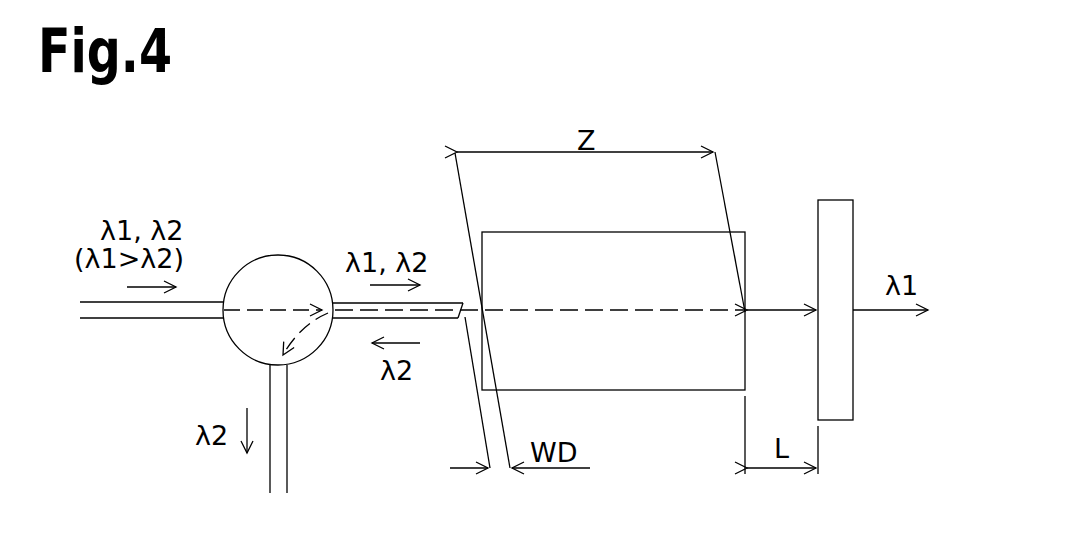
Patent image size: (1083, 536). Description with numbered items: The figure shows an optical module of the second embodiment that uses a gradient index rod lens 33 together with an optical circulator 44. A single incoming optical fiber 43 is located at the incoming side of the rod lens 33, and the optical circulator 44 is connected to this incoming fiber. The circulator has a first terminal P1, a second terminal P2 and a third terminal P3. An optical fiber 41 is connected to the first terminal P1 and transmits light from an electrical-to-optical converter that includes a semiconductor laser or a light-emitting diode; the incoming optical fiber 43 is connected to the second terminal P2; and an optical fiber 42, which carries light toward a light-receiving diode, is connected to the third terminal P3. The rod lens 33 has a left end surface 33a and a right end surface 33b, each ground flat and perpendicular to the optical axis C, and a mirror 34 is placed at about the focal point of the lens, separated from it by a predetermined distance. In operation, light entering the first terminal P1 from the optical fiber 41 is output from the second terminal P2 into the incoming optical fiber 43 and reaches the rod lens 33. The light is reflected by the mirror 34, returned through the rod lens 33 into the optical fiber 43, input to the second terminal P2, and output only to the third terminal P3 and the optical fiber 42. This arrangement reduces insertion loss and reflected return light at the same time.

The optical fiber 41 is at (123, 320).
The optical fiber 42 is at (290, 453).
The incoming optical fiber 43 is at (436, 321).
The optical circulator 44 is at (292, 258).
The gradient index rod lens 33 is at (585, 232).
The left end surface 33a is at (478, 246).
The right end surface 33b is at (746, 245).
The mirror 34 is at (836, 200).
The optical axis C is at (604, 312).
The first terminal P1 is at (226, 308).
The second terminal P2 is at (332, 322).
The third terminal P3 is at (258, 362).